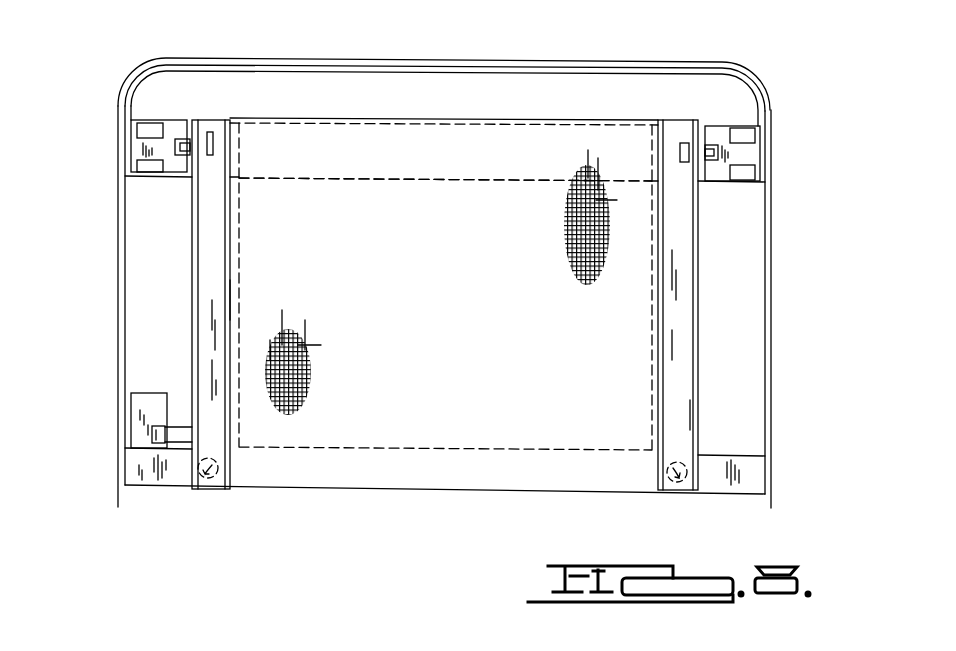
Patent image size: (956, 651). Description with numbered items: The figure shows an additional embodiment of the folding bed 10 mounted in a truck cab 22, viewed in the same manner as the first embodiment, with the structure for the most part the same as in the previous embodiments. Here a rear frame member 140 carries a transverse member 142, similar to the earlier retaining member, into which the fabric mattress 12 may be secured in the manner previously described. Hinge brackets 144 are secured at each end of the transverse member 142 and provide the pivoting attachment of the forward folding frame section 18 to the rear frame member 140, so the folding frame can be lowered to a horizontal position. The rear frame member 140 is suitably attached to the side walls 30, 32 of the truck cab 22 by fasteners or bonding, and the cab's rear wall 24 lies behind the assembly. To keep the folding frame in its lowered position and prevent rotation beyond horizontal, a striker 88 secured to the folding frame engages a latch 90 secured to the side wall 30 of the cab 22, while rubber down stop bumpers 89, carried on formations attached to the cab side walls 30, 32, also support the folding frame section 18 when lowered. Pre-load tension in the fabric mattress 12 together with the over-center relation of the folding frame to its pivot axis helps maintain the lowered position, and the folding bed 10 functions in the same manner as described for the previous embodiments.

The folding bed 10 is at (419, 512).
The fabric mattress 12 is at (395, 293).
The forward folding frame section 18 is at (338, 497).
The cab 22 is at (442, 256).
The rear wall 24 is at (535, 64).
The side wall 30 is at (118, 245).
The side wall 32 is at (771, 303).
The striker 88 is at (180, 415).
The rubber down stop bumper 89 is at (205, 492).
The latch 90 is at (144, 393).
The rear frame member 140 is at (415, 113).
The transverse member 142 is at (219, 130).
The hinge bracket 144 is at (149, 126).